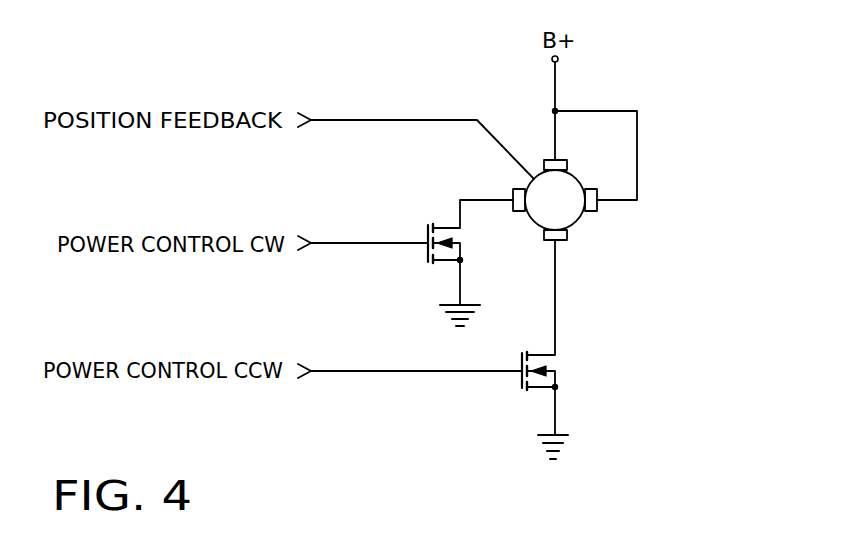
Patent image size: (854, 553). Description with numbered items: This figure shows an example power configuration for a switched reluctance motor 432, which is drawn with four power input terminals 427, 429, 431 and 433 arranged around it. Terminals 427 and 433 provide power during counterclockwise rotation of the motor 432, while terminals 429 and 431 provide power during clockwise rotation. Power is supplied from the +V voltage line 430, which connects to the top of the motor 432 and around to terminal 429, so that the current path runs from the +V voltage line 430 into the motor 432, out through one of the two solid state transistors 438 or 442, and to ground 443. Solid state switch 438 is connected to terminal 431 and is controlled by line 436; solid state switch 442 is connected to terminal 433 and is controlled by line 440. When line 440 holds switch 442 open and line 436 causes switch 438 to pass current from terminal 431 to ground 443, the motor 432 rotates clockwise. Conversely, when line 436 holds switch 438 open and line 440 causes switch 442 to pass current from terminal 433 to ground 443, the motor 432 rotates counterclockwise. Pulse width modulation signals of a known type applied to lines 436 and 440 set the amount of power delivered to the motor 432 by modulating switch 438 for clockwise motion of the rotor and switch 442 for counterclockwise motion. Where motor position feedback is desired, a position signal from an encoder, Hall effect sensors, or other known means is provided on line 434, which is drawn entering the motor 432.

The power input terminal 427 is at (545, 160).
The power input terminal 429 is at (592, 184).
The +V voltage line 430 is at (555, 82).
The power input terminal 431 is at (510, 187).
The switched reluctance motor 432 is at (570, 218).
The power input terminal 433 is at (542, 237).
The position signal line 434 is at (420, 120).
The control line 436 is at (367, 245).
The solid state transistor switch 438 is at (427, 233).
The control line 440 is at (362, 372).
The solid state transistor switch 442 is at (520, 362).
The ground 443 is at (562, 433).